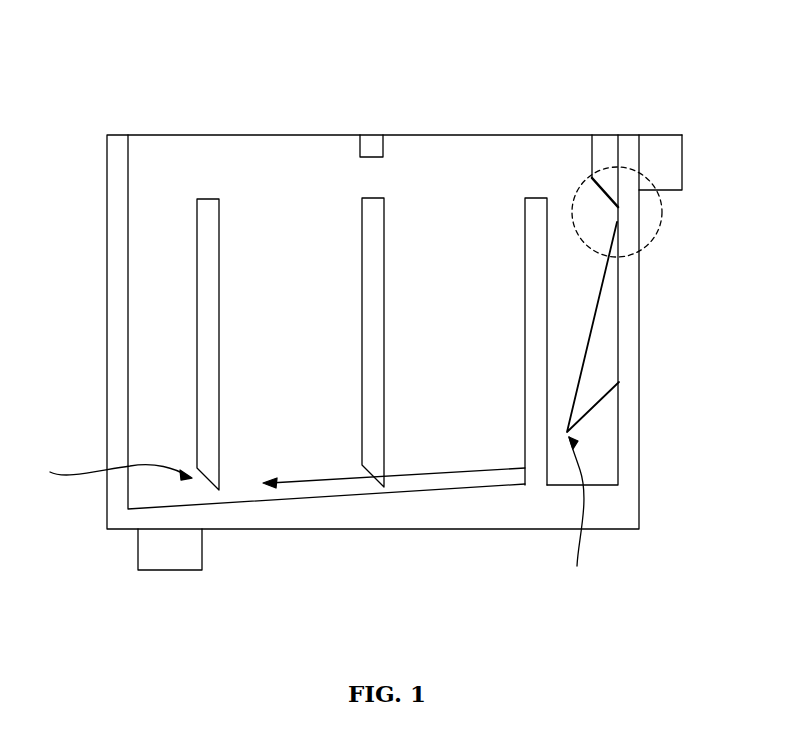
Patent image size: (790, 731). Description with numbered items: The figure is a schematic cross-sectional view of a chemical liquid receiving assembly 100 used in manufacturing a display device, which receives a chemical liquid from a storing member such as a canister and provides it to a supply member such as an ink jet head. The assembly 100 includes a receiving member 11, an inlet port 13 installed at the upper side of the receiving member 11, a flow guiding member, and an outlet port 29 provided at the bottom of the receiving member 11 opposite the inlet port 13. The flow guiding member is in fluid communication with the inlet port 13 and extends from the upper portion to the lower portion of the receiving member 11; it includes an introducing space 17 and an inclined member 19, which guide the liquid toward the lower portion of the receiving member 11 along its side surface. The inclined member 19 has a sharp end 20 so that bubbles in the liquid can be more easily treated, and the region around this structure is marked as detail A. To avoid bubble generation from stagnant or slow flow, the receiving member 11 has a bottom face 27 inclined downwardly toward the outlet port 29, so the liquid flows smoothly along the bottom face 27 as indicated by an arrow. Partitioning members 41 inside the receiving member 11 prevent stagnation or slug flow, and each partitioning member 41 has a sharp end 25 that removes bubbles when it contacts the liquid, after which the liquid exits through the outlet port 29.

The chemical liquid receiving assembly 100 is at (386, 354).
The receiving member 11 is at (107, 290).
The inlet port 13 is at (682, 162).
The introducing space 17 is at (602, 140).
The inclined member 19 is at (590, 342).
The sharp end 20 is at (581, 517).
The sharp end 25 is at (107, 474).
The bottom face 27 is at (440, 487).
The outlet port 29 is at (168, 571).
The partitioning member 41 is at (532, 200).
The detail region A is at (662, 225).